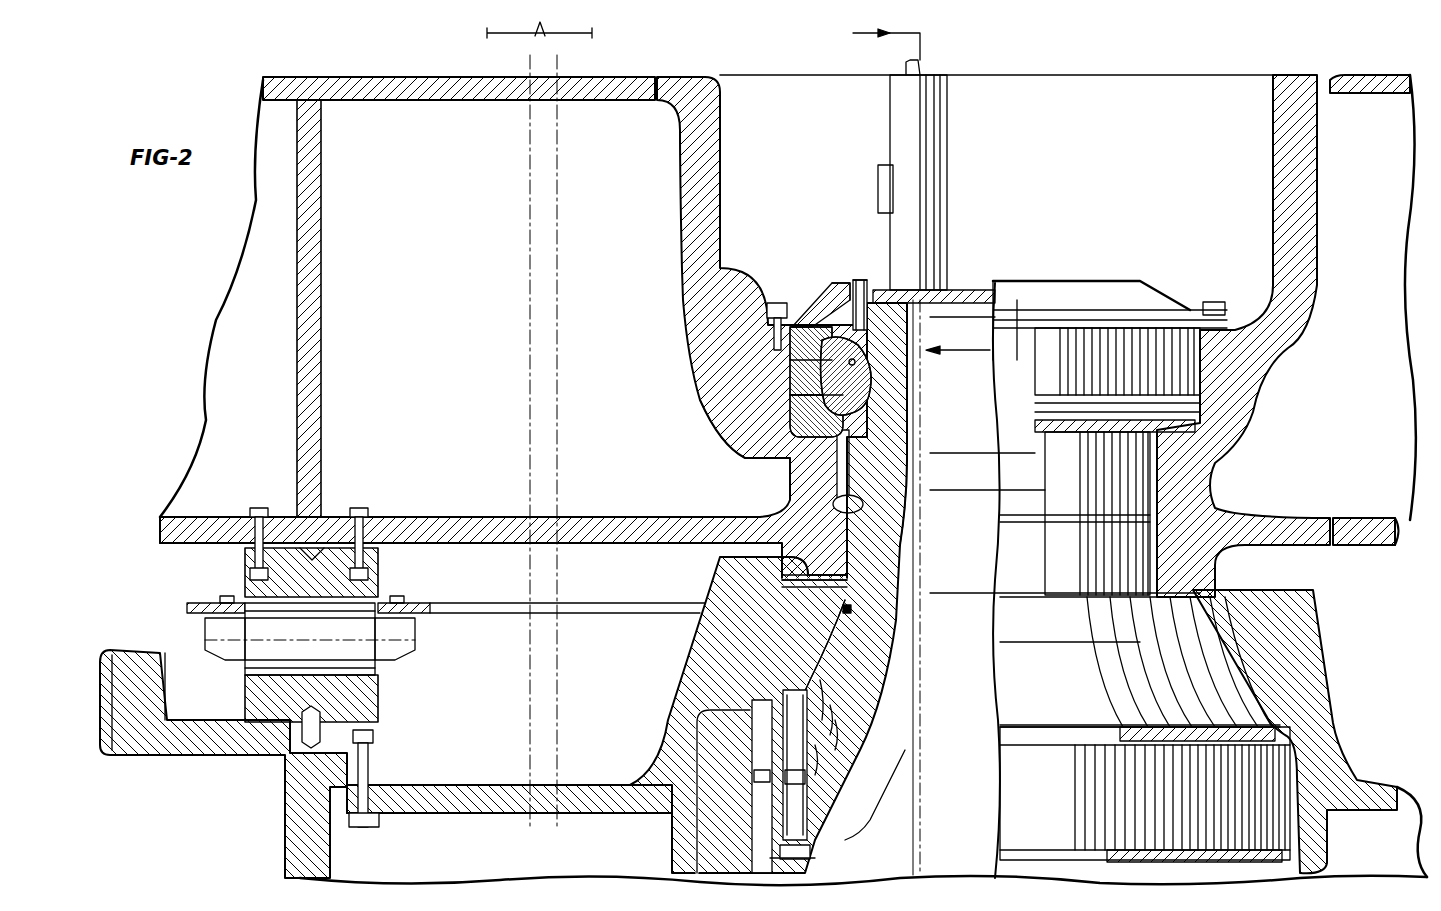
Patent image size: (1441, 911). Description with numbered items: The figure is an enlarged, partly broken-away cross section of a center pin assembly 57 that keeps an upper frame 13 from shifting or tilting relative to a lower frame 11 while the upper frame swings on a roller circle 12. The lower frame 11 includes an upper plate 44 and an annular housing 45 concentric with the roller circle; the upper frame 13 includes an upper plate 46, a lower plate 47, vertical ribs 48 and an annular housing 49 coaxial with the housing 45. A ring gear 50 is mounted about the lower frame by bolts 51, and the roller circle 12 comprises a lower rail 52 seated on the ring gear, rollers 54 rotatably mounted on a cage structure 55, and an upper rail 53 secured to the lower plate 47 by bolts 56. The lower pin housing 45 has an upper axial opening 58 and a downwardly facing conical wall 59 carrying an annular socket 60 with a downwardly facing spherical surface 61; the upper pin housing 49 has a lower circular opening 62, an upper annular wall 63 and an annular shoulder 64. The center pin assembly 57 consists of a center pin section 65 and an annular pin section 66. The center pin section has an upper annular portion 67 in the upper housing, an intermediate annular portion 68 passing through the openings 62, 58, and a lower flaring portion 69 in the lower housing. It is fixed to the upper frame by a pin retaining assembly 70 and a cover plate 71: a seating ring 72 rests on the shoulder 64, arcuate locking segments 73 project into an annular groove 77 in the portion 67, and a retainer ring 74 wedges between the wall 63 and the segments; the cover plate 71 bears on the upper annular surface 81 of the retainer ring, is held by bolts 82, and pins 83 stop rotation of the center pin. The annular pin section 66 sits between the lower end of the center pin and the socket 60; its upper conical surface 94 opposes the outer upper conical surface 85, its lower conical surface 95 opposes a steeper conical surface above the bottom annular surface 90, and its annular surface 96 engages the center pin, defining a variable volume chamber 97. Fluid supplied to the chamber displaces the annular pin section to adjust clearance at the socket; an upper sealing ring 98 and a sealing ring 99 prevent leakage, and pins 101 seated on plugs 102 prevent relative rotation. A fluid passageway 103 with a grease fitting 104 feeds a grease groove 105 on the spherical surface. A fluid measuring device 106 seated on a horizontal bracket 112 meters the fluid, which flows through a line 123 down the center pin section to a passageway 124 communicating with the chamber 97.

The lower frame 11 is at (295, 842).
The roller circle 12 is at (178, 577).
The upper frame 13 is at (352, 78).
The upper plate 44 is at (445, 813).
The annular housing 45 is at (690, 678).
The upper plate 46 is at (408, 100).
The lower plate 47 is at (472, 520).
The vertical ribs 48 is at (322, 315).
The annular housing 49 is at (680, 238).
The ring gear 50 is at (165, 755).
The bolts 51 is at (372, 755).
The lower rail 52 is at (380, 698).
The upper rail 53 is at (382, 558).
The rollers 54 is at (245, 662).
The cage structure 55 is at (418, 605).
The bolts 56 is at (252, 520).
The center pin assembly 57 is at (1095, 270).
The upper axial opening 58 is at (800, 570).
The downwardly facing conical wall 59 is at (795, 597).
The annular socket 60 is at (770, 638).
The downwardly facing spherical surface 61 is at (760, 665).
The lower circular opening 62 is at (835, 500).
The upper annular wall 63 is at (800, 360).
The annular shoulder 64 is at (770, 462).
The center pin section 65 is at (1140, 492).
The annular pin section 66 is at (1210, 675).
The upper annular portion 67 is at (895, 431).
The intermediate annular portion 68 is at (890, 537).
The lower annular flaring portion 69 is at (830, 715).
The pin retaining assembly 70 is at (805, 395).
The cover plate 71 is at (822, 290).
The seating ring 72 is at (800, 412).
The arcuate locking segments 73 is at (870, 400).
The retainer ring 74 is at (795, 377).
The annular groove 77 is at (860, 358).
The upper annular surface 81 is at (805, 312).
The bolts 82 is at (770, 302).
The pins 83 is at (858, 280).
The outer upper conical surface 85 is at (820, 690).
The bottom annular surface 90 is at (780, 862).
The upper conical surface 94 is at (850, 657).
The lower conical surface 95 is at (815, 755).
The annular surface 96 is at (775, 822).
The variable volume chamber 97 is at (830, 725).
The upper sealing ring 98 is at (855, 615).
The sealing ring 99 is at (760, 780).
The pins 101 is at (800, 805).
The plugs 102 is at (810, 852).
The fluid passageway 103 is at (770, 722).
The grease fitting 104 is at (680, 868).
The grease groove 105 is at (1025, 650).
The fluid measuring device 106 is at (950, 176).
The horizontal bracket 112 is at (968, 290).
The line 123 is at (850, 825).
The passageway 124 is at (795, 783).